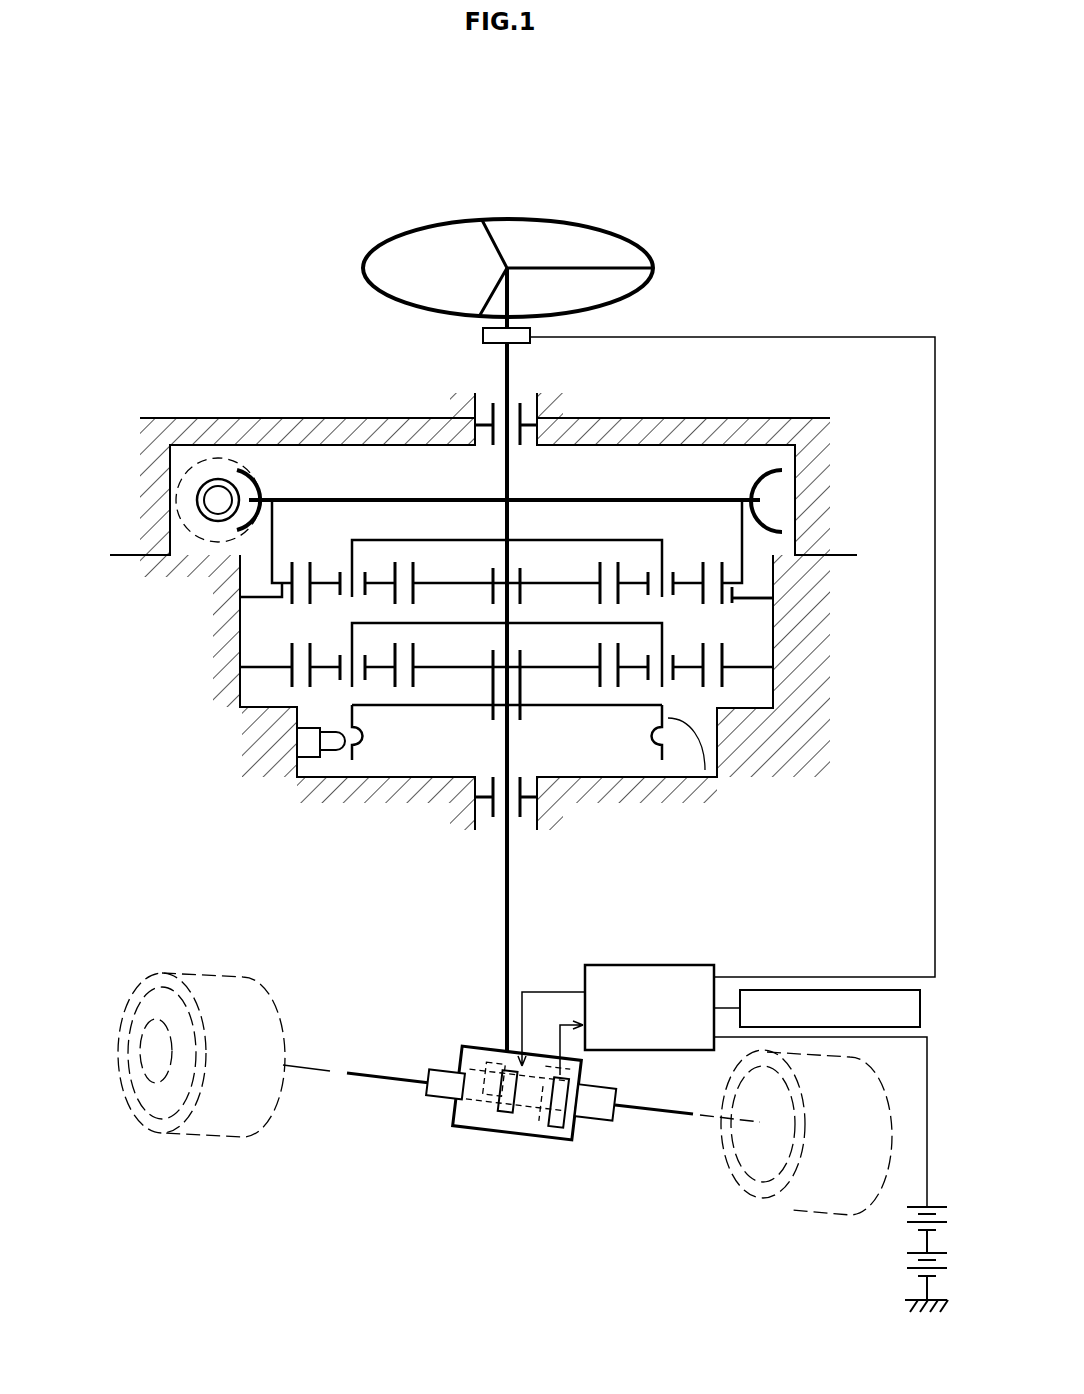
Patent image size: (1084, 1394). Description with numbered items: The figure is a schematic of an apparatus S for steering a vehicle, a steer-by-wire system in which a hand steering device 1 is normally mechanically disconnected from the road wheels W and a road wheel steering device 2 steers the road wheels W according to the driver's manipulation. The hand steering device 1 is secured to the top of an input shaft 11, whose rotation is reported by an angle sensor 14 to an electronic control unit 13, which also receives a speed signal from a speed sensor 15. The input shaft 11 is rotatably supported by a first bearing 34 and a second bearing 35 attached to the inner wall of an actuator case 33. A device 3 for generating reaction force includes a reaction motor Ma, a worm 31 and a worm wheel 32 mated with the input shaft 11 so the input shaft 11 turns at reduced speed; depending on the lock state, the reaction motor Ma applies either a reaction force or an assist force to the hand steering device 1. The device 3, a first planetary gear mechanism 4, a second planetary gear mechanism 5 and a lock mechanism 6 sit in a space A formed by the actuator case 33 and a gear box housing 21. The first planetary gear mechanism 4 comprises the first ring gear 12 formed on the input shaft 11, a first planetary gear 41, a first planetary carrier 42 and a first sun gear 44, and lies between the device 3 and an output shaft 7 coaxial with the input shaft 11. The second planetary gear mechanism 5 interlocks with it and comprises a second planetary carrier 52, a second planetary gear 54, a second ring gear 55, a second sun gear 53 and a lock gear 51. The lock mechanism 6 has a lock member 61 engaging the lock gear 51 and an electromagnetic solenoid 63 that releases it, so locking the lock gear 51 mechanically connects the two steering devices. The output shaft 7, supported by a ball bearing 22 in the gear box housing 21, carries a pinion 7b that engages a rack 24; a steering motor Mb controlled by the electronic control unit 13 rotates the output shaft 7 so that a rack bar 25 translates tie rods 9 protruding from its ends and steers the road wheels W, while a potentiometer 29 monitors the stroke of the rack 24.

The hand steering device 1 is at (602, 207).
The input shaft 11 is at (505, 357).
The angle sensor 14 is at (522, 345).
The output shaft 7 is at (509, 920).
The device for generating reaction force 3 is at (113, 323).
The reaction motor Ma is at (180, 442).
The worm 31 is at (205, 474).
The worm wheel 32 is at (228, 466).
The actuator case 33 is at (828, 454).
The first bearing 34 is at (522, 446).
The gear box housing 21 is at (828, 557).
The second bearing 35 is at (735, 599).
The first planetary gear mechanism 4 is at (210, 765).
The first planetary carrier 42 is at (352, 548).
The first ring gear 12 is at (292, 603).
The first planetary gear 41 is at (353, 600).
The first sun gear 44 is at (413, 606).
The second planetary gear mechanism 5 is at (712, 860).
The lock gear 51 is at (690, 740).
The second planetary carrier 52 is at (710, 622).
The second sun gear 53 is at (724, 688).
The second planetary gear 54 is at (665, 645).
The second ring gear 55 is at (705, 652).
The lock mechanism 6 is at (402, 870).
The lock member 61 is at (334, 751).
The electromagnetic solenoid 63 is at (310, 758).
The ball bearing 22 is at (522, 818).
The space A is at (465, 761).
The apparatus for steering a vehicle S is at (345, 967).
The road wheels W is at (195, 1130).
The tie rods 9 is at (348, 1075).
The road wheel steering device 2 is at (484, 1134).
The rack bar 25 is at (440, 1100).
The rack 24 is at (598, 1126).
The steering motor Mb is at (520, 1128).
The pinion 7b is at (500, 1127).
The potentiometer 29 is at (590, 1070).
The electronic control unit 13 is at (660, 1050).
The speed sensor 15 is at (920, 1012).